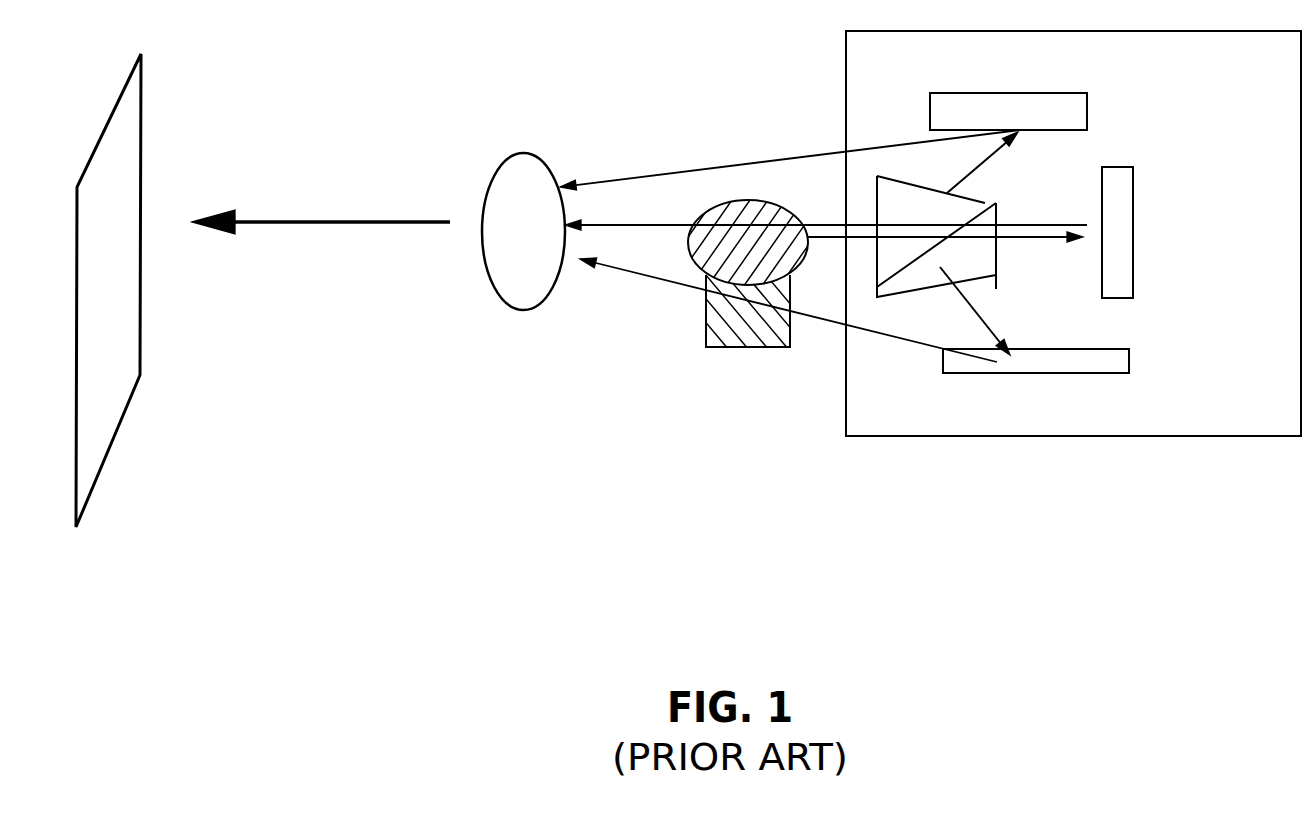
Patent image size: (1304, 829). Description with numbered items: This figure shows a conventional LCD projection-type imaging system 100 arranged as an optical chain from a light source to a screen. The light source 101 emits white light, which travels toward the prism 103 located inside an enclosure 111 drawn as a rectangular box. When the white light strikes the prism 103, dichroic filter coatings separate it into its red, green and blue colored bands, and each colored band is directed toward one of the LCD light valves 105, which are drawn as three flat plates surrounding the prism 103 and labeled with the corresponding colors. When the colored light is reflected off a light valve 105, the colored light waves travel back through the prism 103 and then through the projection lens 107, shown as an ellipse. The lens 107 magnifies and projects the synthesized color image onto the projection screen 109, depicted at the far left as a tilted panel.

The LCD projection-type imaging system 100 is at (688, 301).
The light source 101 is at (757, 200).
The prism 103 is at (903, 181).
The LCD light valves 105 is at (1042, 93).
The projection lens 107 is at (524, 153).
The projection screen 109 is at (100, 470).
The housing / light engine enclosure 111 is at (1122, 436).